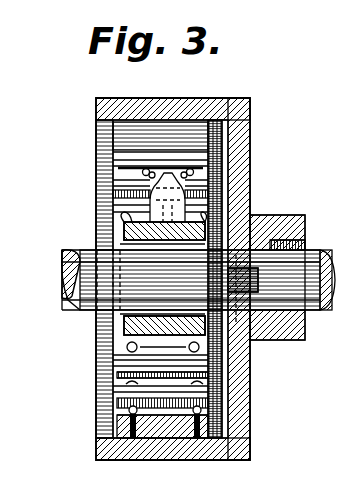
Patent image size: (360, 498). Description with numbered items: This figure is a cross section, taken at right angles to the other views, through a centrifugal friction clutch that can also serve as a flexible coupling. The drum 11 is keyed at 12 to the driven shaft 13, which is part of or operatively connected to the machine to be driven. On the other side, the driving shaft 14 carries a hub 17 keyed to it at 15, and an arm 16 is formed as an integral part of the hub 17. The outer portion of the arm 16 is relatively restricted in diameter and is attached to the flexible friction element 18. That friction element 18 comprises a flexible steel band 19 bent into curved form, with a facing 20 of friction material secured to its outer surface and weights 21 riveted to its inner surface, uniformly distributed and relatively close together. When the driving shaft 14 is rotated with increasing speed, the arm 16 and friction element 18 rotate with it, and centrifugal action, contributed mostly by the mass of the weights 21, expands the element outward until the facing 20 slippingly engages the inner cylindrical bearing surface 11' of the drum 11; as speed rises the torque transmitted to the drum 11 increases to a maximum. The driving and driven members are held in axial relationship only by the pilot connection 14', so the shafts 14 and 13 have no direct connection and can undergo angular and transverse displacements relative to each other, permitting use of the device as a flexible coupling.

The drum 11 is at (188, 297).
The inner cylindrical bearing surface 11' is at (180, 94).
The key 12 is at (280, 207).
The driven shaft 13 is at (320, 313).
The driving shaft 14 is at (138, 296).
The pilot connection 14' is at (274, 350).
The key 15 is at (113, 242).
The arm 16 is at (97, 203).
The hub 17 is at (132, 325).
The flexible friction element 18 is at (168, 460).
The flexible steel band 19 is at (103, 417).
The facing 20 is at (142, 450).
The weights 21 is at (243, 176).